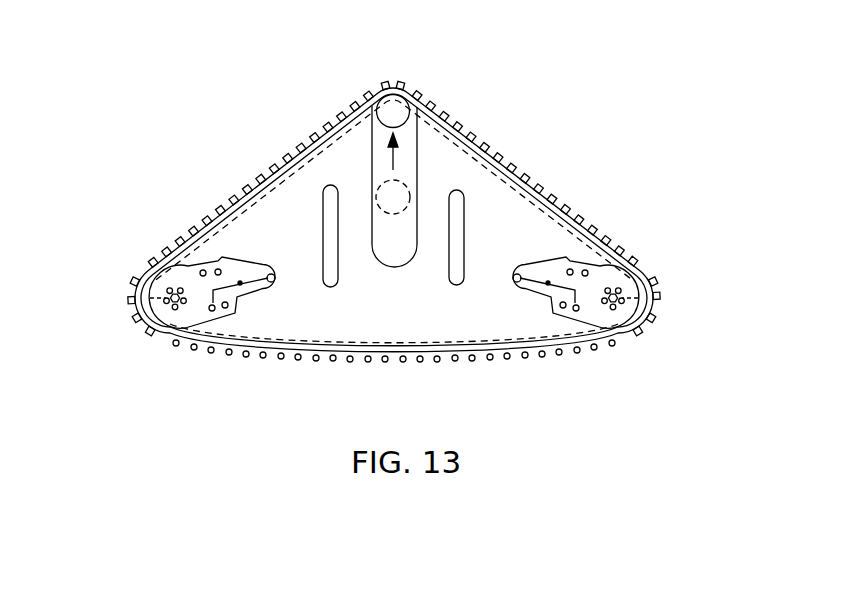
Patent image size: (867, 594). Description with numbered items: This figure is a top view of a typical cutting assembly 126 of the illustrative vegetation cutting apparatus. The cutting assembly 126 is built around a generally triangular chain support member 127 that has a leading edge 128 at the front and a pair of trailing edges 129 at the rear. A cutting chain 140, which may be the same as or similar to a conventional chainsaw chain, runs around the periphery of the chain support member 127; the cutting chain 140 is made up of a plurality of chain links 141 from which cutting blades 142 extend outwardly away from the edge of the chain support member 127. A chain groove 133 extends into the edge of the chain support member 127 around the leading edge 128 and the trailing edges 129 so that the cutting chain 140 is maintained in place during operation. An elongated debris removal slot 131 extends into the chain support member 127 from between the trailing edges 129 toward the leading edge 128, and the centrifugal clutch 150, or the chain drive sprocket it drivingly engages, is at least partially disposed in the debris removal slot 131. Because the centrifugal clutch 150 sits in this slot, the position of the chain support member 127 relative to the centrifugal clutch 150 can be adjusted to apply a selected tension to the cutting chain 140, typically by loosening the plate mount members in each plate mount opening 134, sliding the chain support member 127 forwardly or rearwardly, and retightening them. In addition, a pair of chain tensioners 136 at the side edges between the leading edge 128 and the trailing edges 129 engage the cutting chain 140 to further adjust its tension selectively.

The cutting assembly 126 is at (180, 184).
The chain support member 127 is at (260, 171).
The leading edge 128 is at (302, 360).
The trailing edges 129 is at (313, 137).
The debris removal slot 131 is at (425, 118).
The chain groove 133 is at (245, 365).
The plate mount opening 134 is at (456, 246).
The chain tensioner 136 is at (137, 313).
The cutting chain 140 is at (576, 181).
The chain links 141 is at (567, 226).
The cutting blades 142 is at (592, 250).
The centrifugal clutch 150 is at (363, 97).